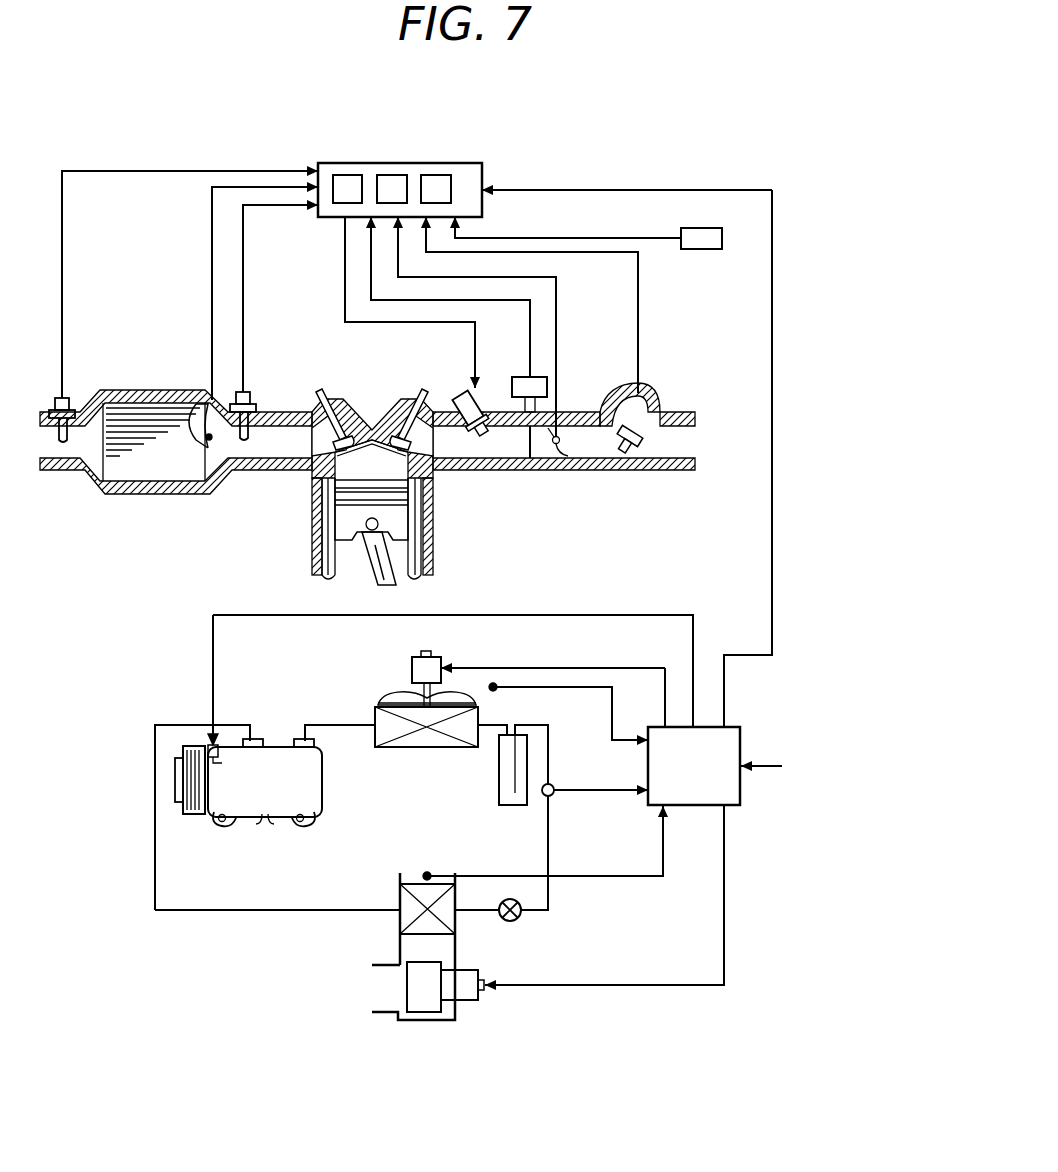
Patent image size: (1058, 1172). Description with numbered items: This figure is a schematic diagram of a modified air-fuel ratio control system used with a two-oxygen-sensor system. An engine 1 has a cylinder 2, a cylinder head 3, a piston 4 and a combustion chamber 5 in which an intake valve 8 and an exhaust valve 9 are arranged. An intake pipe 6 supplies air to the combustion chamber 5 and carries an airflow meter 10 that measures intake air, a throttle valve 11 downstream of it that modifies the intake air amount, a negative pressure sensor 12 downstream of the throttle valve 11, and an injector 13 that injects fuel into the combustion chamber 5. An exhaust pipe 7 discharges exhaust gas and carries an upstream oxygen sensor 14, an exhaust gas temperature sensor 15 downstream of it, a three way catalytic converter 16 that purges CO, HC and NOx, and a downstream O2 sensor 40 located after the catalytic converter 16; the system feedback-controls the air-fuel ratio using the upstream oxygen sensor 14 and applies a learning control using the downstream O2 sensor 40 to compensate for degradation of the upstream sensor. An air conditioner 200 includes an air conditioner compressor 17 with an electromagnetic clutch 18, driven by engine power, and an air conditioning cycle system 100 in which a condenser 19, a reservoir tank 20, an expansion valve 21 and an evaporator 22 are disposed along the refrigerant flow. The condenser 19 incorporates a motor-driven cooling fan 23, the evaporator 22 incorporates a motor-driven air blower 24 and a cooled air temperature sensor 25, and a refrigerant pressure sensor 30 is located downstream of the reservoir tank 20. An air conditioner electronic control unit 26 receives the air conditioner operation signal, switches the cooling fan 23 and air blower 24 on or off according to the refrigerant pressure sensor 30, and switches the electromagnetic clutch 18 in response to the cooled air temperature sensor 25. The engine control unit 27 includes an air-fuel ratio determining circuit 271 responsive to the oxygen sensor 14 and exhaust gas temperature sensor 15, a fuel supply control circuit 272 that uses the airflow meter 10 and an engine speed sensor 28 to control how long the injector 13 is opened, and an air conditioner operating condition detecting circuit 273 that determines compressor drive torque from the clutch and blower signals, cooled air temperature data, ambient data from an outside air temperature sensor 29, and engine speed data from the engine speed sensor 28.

The engine 1 is at (433, 532).
The cylinder 2 is at (324, 574).
The cylinder head 3 is at (346, 426).
The piston 4 is at (344, 524).
The combustion chamber 5 is at (362, 476).
The intake pipe 6 is at (516, 470).
The exhaust pipe 7 is at (240, 470).
The intake valve 8 is at (414, 394).
The exhaust valve 9 is at (322, 394).
The airflow meter 10 is at (634, 470).
The throttle valve 11 is at (562, 470).
The negative pressure sensor 12 is at (514, 380).
The injector 13 is at (454, 394).
The oxygen sensor 14 is at (254, 400).
The exhaust gas temperature sensor 15 is at (193, 404).
The three way catalytic converter 16 is at (122, 404).
The air conditioner compressor 17 is at (260, 816).
The electromagnetic clutch 18 is at (186, 816).
The condenser 19 is at (408, 744).
The reservoir tank 20 is at (510, 806).
The expansion valve 21 is at (518, 920).
The evaporator 22 is at (400, 897).
The cooling fan 23 is at (388, 692).
The air blower 24 is at (425, 1000).
The cooled air temperature sensor 25 is at (428, 872).
The air conditioner electronic control unit 26 is at (738, 806).
The engine control unit 27 is at (488, 152).
The engine speed sensor 28 is at (712, 226).
The outside air temperature sensor 29 is at (500, 692).
The refrigerant pressure sensor 30 is at (554, 782).
The downstream O2 sensor 40 is at (52, 394).
The air conditioning cycle system 100 is at (565, 888).
The air conditioner 200 is at (262, 924).
The air-fuel ratio determining circuit 271 is at (347, 172).
The fuel supply control circuit 272 is at (398, 172).
The air conditioner operating condition detecting circuit 273 is at (450, 172).